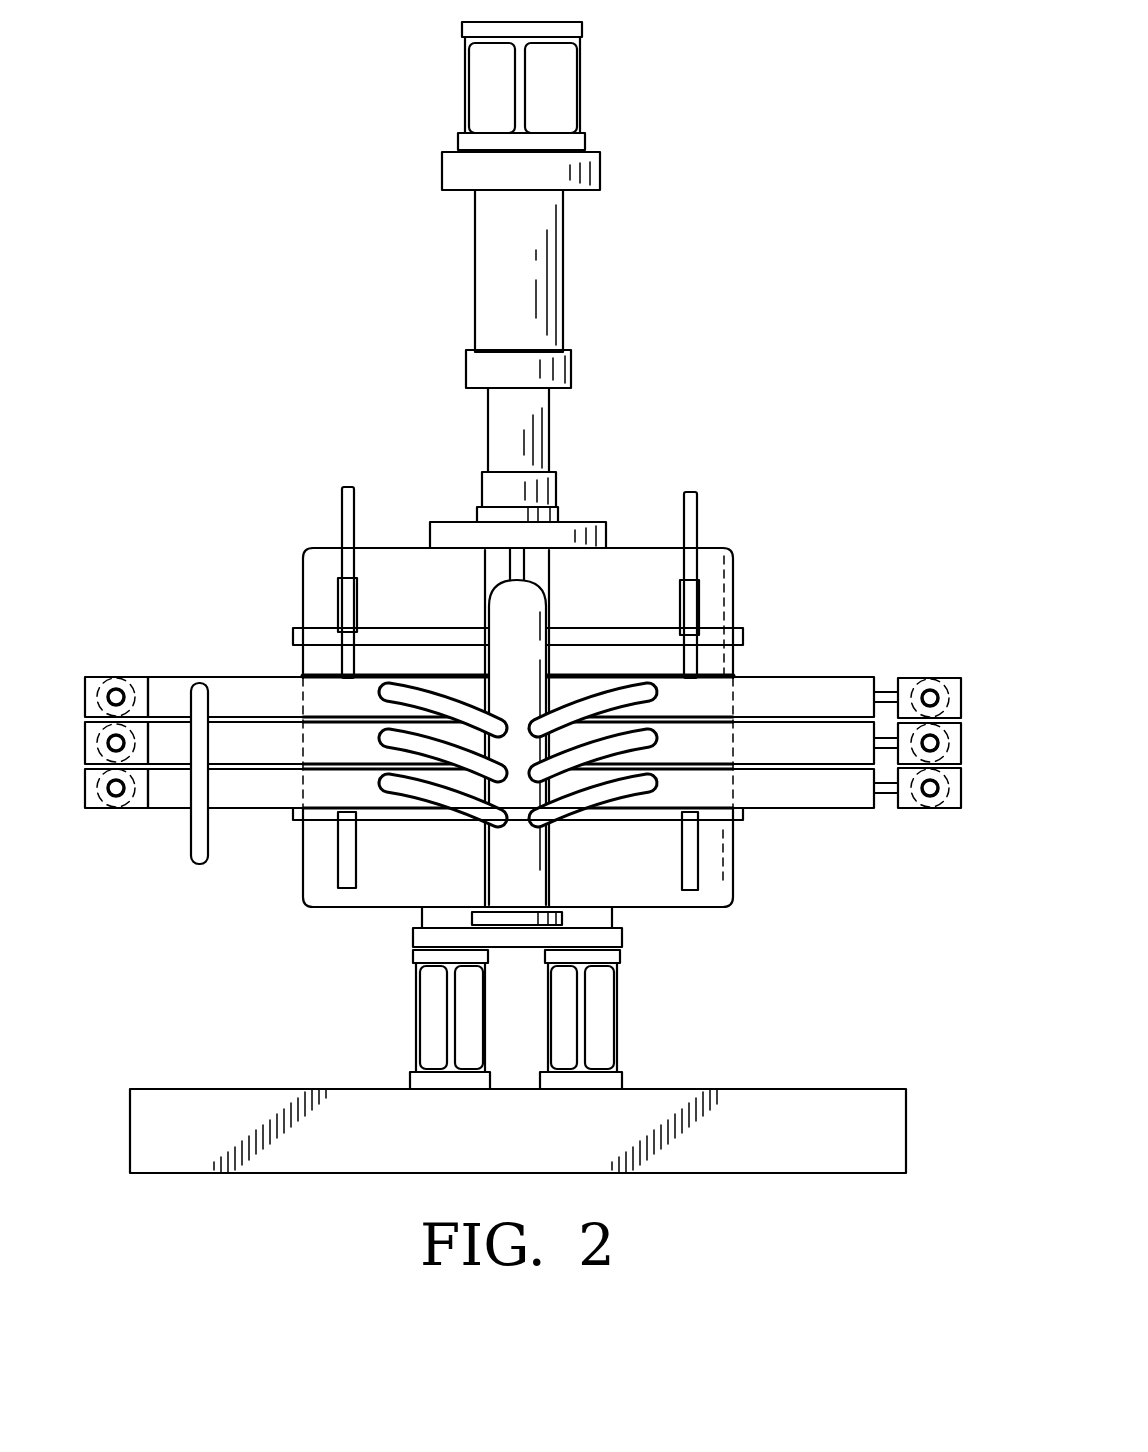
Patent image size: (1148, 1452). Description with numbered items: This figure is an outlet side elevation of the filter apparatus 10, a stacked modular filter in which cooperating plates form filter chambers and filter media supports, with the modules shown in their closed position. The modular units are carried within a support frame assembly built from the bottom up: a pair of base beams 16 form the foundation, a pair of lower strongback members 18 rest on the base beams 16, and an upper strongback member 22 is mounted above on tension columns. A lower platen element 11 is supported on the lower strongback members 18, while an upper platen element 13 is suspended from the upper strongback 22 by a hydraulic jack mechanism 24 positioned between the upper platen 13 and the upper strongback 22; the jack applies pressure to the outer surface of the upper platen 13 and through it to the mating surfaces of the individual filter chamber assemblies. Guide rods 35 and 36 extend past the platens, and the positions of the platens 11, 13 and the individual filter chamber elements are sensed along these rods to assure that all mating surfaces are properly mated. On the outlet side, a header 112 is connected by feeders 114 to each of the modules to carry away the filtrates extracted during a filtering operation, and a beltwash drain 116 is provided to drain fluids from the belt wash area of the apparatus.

The filter apparatus 10 is at (346, 281).
The upper strongback member 22 is at (570, 82).
The hydraulic jack mechanism 24 is at (549, 428).
The upper platen element 13 is at (722, 593).
The guide rod 35 is at (340, 507).
The guide rod 36 is at (698, 514).
The beltwash drain 116 is at (192, 866).
The header 112 is at (533, 855).
The feeders 114 is at (423, 700).
The lower platen element 11 is at (707, 855).
The lower strongback members 18 is at (430, 1018).
The base beams 16 is at (797, 1107).